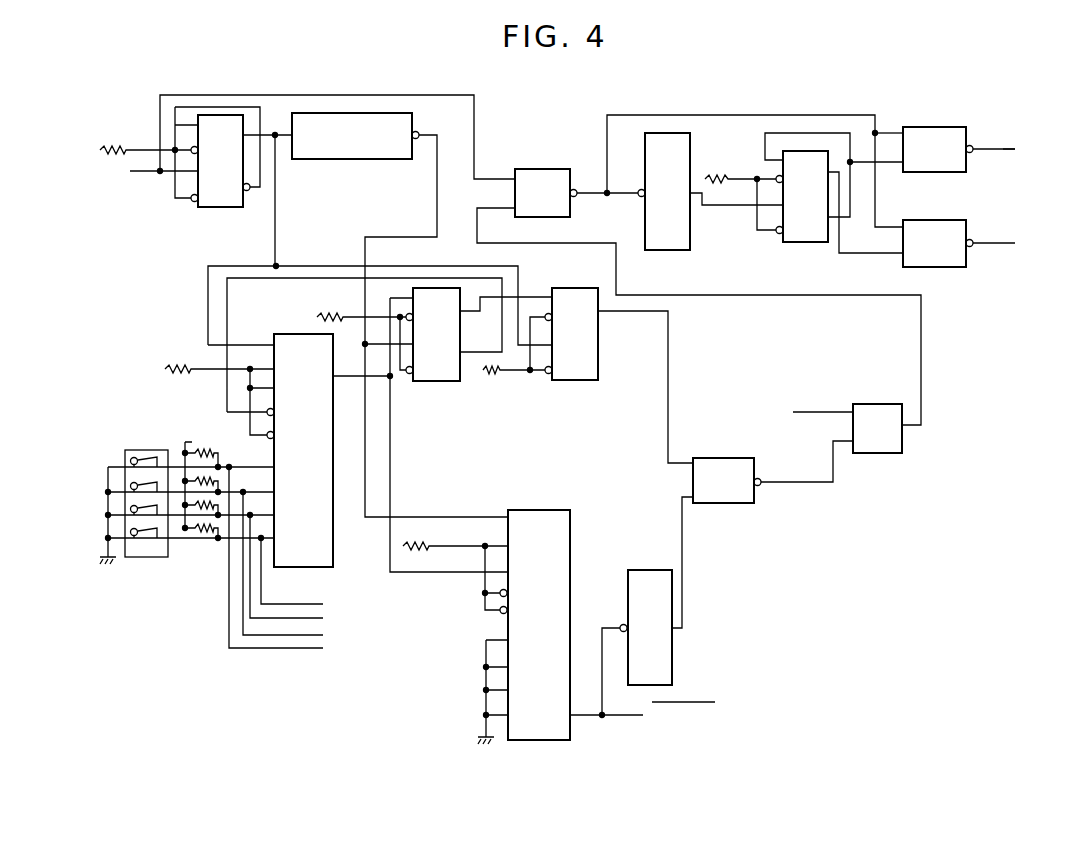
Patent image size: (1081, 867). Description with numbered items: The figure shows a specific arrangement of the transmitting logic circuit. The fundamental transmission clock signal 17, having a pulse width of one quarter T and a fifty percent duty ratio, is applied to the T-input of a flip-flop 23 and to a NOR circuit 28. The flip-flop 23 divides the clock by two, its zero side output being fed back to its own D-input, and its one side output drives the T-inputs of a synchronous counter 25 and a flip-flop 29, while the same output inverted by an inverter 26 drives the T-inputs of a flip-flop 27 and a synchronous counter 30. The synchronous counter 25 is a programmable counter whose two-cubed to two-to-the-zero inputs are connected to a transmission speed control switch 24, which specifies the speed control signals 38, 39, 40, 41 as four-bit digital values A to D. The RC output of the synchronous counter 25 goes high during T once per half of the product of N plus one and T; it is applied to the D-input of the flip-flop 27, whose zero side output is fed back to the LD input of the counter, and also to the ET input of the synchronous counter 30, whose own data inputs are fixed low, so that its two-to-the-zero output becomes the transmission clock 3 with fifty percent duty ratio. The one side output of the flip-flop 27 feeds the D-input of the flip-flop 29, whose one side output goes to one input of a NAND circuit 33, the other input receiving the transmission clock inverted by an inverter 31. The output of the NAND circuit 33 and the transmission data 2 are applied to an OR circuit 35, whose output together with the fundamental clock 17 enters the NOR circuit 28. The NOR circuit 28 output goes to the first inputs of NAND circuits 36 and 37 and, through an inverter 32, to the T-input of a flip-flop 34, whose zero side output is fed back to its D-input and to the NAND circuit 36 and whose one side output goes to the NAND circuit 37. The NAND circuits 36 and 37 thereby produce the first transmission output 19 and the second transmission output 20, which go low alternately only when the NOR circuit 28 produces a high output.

The transmission data 2 is at (800, 412).
The transmission clock 3 is at (616, 715).
The fundamental transmission clock signal 17 is at (143, 172).
The first transmission output 19 is at (1003, 149).
The second transmission output 20 is at (990, 243).
The flip-flop 23 is at (217, 208).
The transmission speed control switch 24 is at (147, 557).
The synchronous counter 25 is at (333, 547).
The inverter 26 is at (366, 160).
The flip-flop 27 is at (440, 381).
The NOR circuit 28 is at (521, 169).
The flip-flop 29 is at (570, 381).
The synchronous counter 30 is at (570, 527).
The inverter 31 is at (672, 663).
The inverter 32 is at (690, 148).
The NAND circuit 33 is at (713, 458).
The flip-flop 34 is at (815, 243).
The OR circuit 35 is at (874, 404).
The NAND circuit 36 is at (933, 127).
The NAND circuit 37 is at (928, 220).
The speed control signal 38 is at (252, 648).
The speed control signal 39 is at (283, 635).
The speed control signal 40 is at (303, 618).
The speed control signal 41 is at (291, 604).